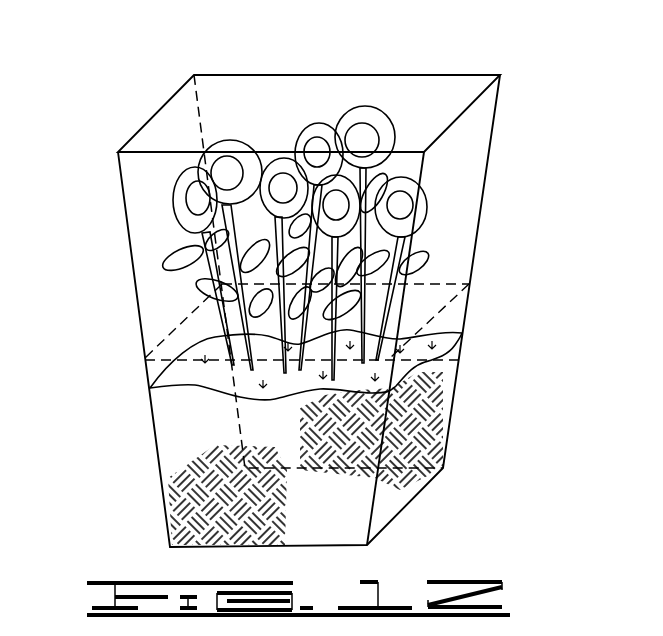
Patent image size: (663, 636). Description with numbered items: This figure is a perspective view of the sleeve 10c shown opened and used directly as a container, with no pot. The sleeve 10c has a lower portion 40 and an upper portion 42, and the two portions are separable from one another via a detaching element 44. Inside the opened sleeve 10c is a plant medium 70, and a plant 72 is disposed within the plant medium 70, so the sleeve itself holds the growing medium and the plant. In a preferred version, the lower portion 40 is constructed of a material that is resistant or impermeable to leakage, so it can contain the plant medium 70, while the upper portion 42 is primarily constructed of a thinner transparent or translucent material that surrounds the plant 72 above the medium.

The sleeve 10c is at (480, 230).
The upper portion 42 is at (492, 138).
The detaching element 44 is at (181, 330).
The plant medium 70 is at (462, 333).
The lower portion 40 is at (450, 428).
The plant 72 is at (363, 112).